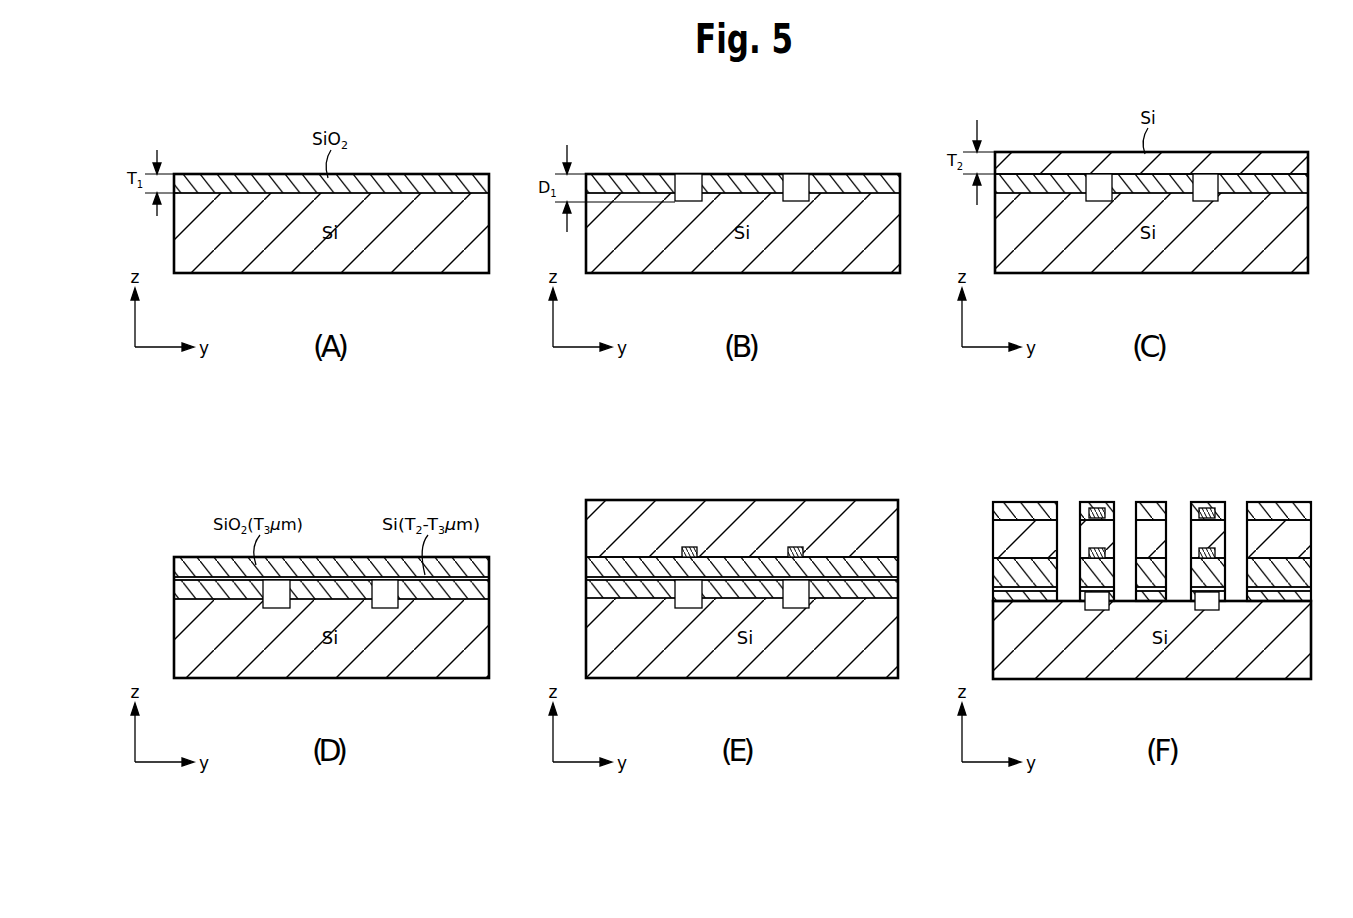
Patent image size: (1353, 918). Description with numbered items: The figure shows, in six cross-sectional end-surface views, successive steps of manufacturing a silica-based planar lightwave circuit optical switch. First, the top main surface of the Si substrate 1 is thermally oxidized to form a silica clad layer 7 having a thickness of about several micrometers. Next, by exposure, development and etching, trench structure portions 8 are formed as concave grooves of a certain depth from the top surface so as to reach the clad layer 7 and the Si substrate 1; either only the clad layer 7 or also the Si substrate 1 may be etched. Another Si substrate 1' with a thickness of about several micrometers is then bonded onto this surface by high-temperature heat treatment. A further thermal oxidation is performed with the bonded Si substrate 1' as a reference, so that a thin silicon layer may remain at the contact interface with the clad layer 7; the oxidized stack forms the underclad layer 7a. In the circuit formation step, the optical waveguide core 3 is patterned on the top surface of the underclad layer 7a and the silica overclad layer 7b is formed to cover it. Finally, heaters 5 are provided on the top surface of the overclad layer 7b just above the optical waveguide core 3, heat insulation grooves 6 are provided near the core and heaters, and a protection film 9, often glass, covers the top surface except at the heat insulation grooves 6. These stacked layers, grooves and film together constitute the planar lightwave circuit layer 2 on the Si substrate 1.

The Si substrate 1 is at (757, 436).
The Si substrate 1' is at (1169, 157).
The clad layer 7 is at (478, 176).
The underclad layer 7a is at (168, 557).
The overclad layer 7b is at (586, 536).
The trench structure portions 8 is at (692, 198).
The optical waveguide core 3 is at (689, 546).
The protection film 9 is at (1021, 502).
The heat insulation grooves 6 is at (1069, 502).
The heaters 5 is at (1097, 507).
The planar lightwave circuit layer 2 is at (1314, 502).